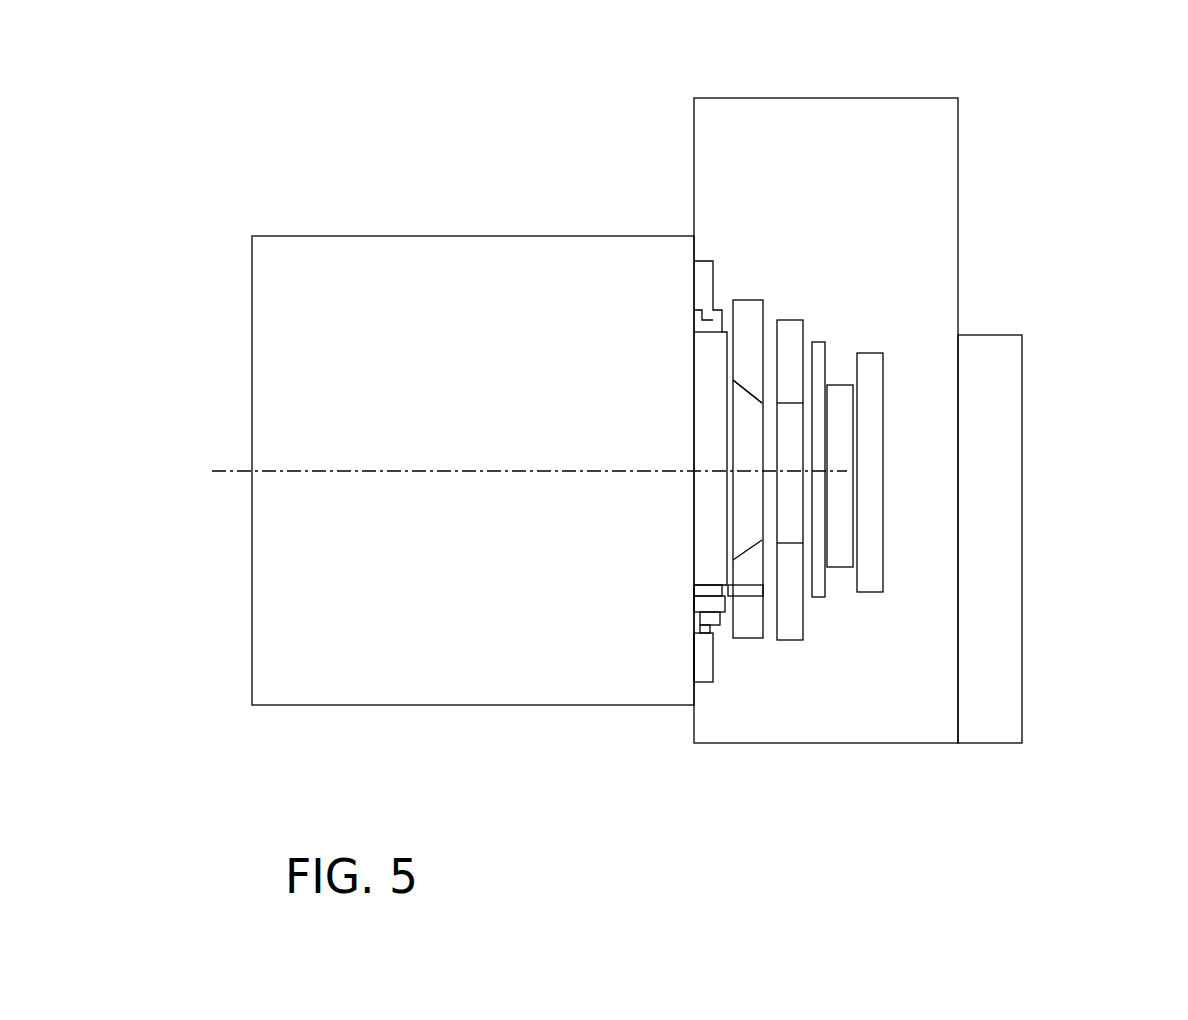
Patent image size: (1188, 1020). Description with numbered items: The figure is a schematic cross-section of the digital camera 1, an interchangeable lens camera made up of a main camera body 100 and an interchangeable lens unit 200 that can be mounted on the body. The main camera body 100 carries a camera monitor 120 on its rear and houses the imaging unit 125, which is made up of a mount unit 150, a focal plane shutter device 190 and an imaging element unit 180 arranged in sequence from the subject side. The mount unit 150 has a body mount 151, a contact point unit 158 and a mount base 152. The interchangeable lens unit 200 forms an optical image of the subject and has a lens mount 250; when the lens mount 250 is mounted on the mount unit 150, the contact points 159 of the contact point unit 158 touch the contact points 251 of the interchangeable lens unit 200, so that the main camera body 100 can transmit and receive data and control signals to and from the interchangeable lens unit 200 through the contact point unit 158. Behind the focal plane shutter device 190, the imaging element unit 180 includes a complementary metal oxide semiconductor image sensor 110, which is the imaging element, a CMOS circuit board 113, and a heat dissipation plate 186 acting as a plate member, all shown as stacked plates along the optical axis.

The digital camera 1 is at (335, 108).
The main camera body 100 is at (845, 97).
The interchangeable lens unit 200 is at (312, 233).
The camera monitor 120 is at (997, 381).
The imaging unit 125 is at (927, 813).
The mount unit 150 is at (722, 45).
The body mount 151 is at (700, 268).
The mount base 152 is at (745, 315).
The contact point unit 158 is at (747, 568).
The contact points 159 is at (738, 594).
The focal plane shutter device 190 is at (790, 642).
The imaging element unit 180 is at (812, 607).
The heat dissipation plate 186 is at (815, 563).
The CMOS image sensor 110 is at (847, 493).
The CMOS circuit board 113 is at (876, 458).
The lens mount 250 is at (696, 312).
The contact points 251 is at (702, 597).